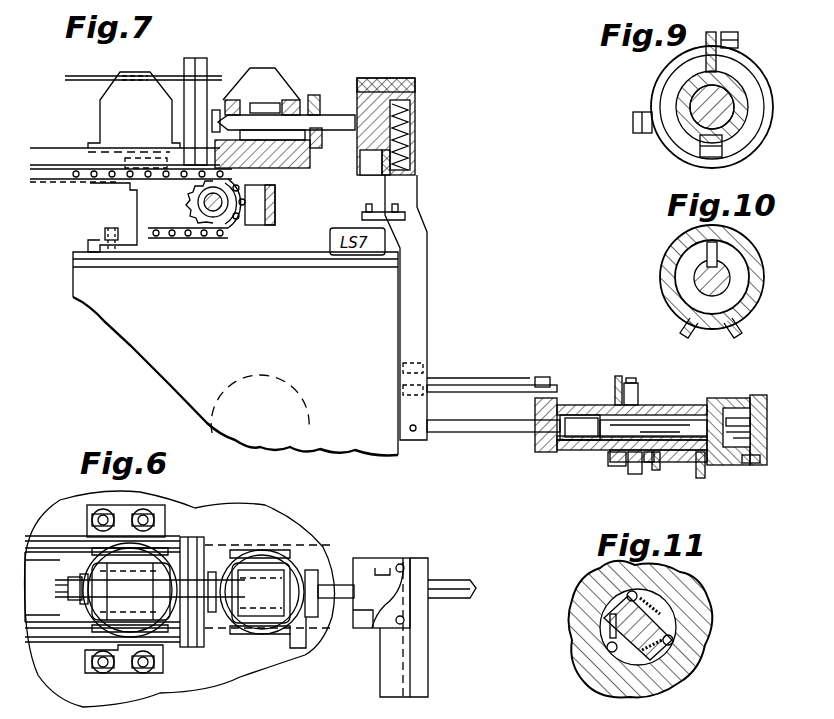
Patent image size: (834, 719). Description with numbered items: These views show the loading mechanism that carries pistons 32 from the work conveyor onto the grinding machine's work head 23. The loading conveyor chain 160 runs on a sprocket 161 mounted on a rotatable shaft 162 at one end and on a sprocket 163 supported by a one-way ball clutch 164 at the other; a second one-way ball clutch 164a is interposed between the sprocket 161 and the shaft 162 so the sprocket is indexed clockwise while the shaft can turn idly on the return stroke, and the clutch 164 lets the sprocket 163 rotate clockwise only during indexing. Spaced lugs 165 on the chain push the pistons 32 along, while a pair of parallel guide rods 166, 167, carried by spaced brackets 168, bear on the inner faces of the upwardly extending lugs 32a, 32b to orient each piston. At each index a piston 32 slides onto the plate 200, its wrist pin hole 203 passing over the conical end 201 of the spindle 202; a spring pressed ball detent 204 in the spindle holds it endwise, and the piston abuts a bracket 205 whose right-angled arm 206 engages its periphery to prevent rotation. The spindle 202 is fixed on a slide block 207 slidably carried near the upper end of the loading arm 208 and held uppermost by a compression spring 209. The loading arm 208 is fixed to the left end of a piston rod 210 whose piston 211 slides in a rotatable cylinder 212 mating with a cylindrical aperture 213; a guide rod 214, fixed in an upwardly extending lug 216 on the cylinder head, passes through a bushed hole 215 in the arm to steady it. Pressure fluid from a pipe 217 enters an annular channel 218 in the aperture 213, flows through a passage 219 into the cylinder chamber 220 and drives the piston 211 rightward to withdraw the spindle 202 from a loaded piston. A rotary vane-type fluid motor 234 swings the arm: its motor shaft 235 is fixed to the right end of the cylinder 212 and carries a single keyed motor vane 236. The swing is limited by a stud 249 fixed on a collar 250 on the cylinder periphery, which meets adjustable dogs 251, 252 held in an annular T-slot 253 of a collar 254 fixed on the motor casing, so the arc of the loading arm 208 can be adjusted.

In FIG. 7, the work head 23 is at (138, 335).
In FIG. 6, the work head 23 is at (158, 690).
In FIG. 7, the piston 32 is at (108, 115).
In FIG. 6, the piston 32 is at (290, 560).
In FIG. 7, the upwardly extending lug 32a is at (138, 72).
In FIG. 6, the upwardly extending lug 32a is at (185, 636).
In FIG. 7, the upwardly extending lug 32b is at (262, 68).
In FIG. 6, the upwardly extending lug 32b is at (128, 545).
In FIG. 7, the loading conveyor chain 160 is at (228, 232).
In FIG. 6, the loading conveyor chain 160 is at (75, 603).
In FIG. 11, the sprocket 161 is at (648, 685).
In FIG. 11, the rotatable shaft 162 is at (660, 616).
In FIG. 7, the sprocket 163 is at (190, 204).
In FIG. 7, the one-way ball clutch 164 is at (232, 210).
In FIG. 11, the one-way ball clutch 164a is at (680, 641).
In FIG. 7, the lug 165 is at (85, 158).
In FIG. 6, the lug 165 is at (85, 576).
In FIG. 6, the guide rod 166 is at (40, 545).
In FIG. 7, the guide rod 167 is at (85, 78).
In FIG. 6, the guide rod 167 is at (42, 632).
In FIG. 7, the bracket 168 is at (190, 58).
In FIG. 6, the bracket 168 is at (192, 537).
In FIG. 7, the plate 200 is at (280, 170).
In FIG. 7, the conical end 201 is at (218, 118).
In FIG. 6, the conical end 201 is at (218, 588).
In FIG. 7, the spindle 202 is at (340, 115).
In FIG. 6, the spindle 202 is at (338, 585).
In FIG. 7, the wrist pin hole 203 is at (298, 100).
In FIG. 7, the spring pressed ball detent 204 is at (285, 108).
In FIG. 7, the bracket 205 is at (322, 144).
In FIG. 6, the bracket 205 is at (323, 615).
In FIG. 6, the arm 206 is at (273, 637).
In FIG. 7, the slide block 207 is at (415, 105).
In FIG. 6, the slide block 207 is at (388, 580).
In FIG. 7, the loading arm 208 is at (408, 205).
In FIG. 6, the loading arm 208 is at (428, 640).
In FIG. 7, the compression spring 209 is at (400, 165).
In FIG. 7, the piston rod 210 is at (460, 432).
In FIG. 6, the piston rod 210 is at (450, 582).
In FIG. 7, the piston 211 is at (580, 418).
In FIG. 9, the piston 211 is at (720, 108).
In FIG. 7, the rotatable cylinder 212 is at (590, 410).
In FIG. 9, the rotatable cylinder 212 is at (730, 90).
In FIG. 7, the cylindrical aperture 213 is at (668, 405).
In FIG. 7, the guide rod 214 is at (478, 388).
In FIG. 7, the bushed hole 215 is at (425, 385).
In FIG. 7, the upwardly extending lug 216 is at (532, 383).
In FIG. 7, the pipe 217 is at (672, 464).
In FIG. 7, the annular channel 218 is at (698, 462).
In FIG. 7, the passage 219 is at (590, 452).
In FIG. 7, the cylinder chamber 220 is at (548, 455).
In FIG. 7, the rotary vane-type fluid motor 234 is at (760, 462).
In FIG. 9, the rotary vane-type fluid motor 234 is at (662, 144).
In FIG. 10, the rotary vane-type fluid motor 234 is at (762, 296).
In FIG. 7, the motor shaft 235 is at (765, 428).
In FIG. 10, the motor shaft 235 is at (707, 273).
In FIG. 7, the motor vane 236 is at (738, 415).
In FIG. 10, the motor vane 236 is at (716, 254).
In FIG. 7, the stud 249 is at (620, 376).
In FIG. 9, the stud 249 is at (716, 36).
In FIG. 7, the collar 250 is at (612, 466).
In FIG. 9, the collar 250 is at (745, 133).
In FIG. 9, the adjustable dog 251 is at (642, 112).
In FIG. 7, the adjustable dog 252 is at (632, 383).
In FIG. 9, the adjustable dog 252 is at (740, 42).
In FIG. 7, the annular T-slot 253 is at (640, 474).
In FIG. 7, the collar 254 is at (630, 476).
In FIG. 9, the collar 254 is at (738, 153).